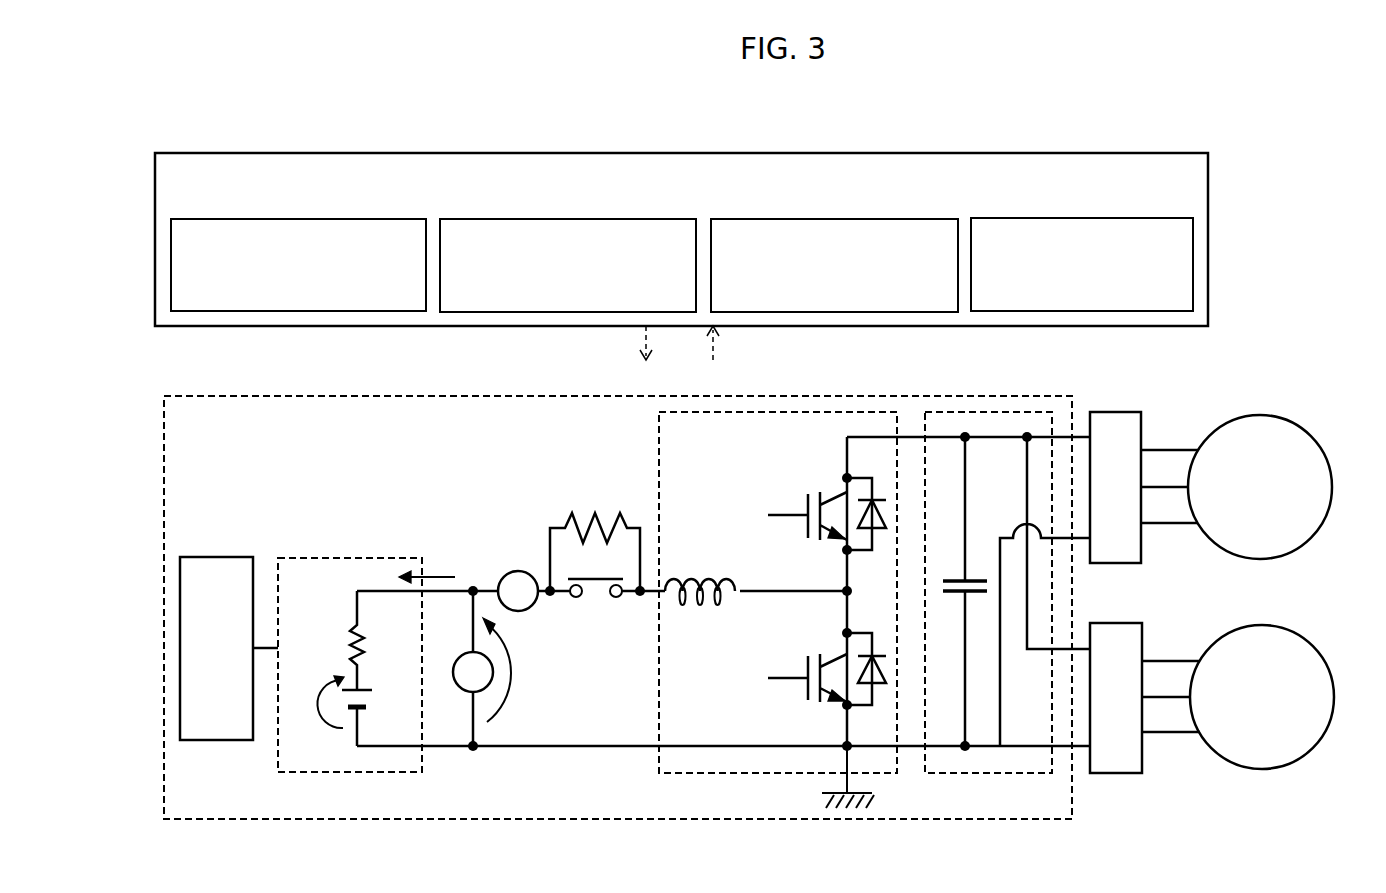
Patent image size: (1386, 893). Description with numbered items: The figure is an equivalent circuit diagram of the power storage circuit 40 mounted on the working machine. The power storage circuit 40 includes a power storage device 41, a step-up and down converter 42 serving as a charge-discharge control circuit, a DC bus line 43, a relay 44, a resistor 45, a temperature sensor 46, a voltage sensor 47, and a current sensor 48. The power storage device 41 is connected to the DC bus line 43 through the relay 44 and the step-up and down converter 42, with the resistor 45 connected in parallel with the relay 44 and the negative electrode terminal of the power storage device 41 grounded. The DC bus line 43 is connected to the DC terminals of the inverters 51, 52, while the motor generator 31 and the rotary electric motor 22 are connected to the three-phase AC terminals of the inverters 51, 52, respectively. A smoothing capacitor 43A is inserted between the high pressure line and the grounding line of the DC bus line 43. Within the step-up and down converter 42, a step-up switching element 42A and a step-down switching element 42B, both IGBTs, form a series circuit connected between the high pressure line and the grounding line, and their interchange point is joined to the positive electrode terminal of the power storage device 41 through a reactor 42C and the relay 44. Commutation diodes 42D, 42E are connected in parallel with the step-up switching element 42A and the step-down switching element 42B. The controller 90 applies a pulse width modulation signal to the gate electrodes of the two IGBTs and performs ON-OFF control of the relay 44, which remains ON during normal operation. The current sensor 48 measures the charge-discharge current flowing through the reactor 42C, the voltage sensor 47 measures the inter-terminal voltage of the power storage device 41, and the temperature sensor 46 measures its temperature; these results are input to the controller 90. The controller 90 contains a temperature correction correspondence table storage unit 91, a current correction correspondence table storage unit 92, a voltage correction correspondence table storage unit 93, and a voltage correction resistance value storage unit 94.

The controller 90 is at (1208, 213).
The temperature correction correspondence table storage unit 91 is at (268, 219).
The current correction correspondence table storage unit 92 is at (538, 219).
The voltage correction correspondence table storage unit 93 is at (808, 219).
The voltage correction resistance value storage unit 94 is at (1070, 219).
The power storage circuit 40 is at (212, 396).
The power storage device 41 is at (300, 772).
The step-up and down converter 42 is at (705, 773).
The step-up switching element 42A is at (808, 700).
The step-down switching element 42B is at (810, 492).
The reactor 42C is at (690, 575).
The commutation diode 42D is at (887, 683).
The commutation diode 42E is at (886, 500).
The DC bus line 43 is at (1020, 773).
The smoothing capacitor 43A is at (975, 581).
The relay 44 is at (594, 602).
The resistor 45 is at (597, 520).
The temperature sensor 46 is at (212, 557).
The voltage sensor 47 is at (462, 690).
The current sensor 48 is at (510, 572).
The inverter 51 is at (1130, 412).
The inverter 52 is at (1113, 773).
The motor generator 31 is at (1240, 418).
The rotary electric motor 22 is at (1232, 765).